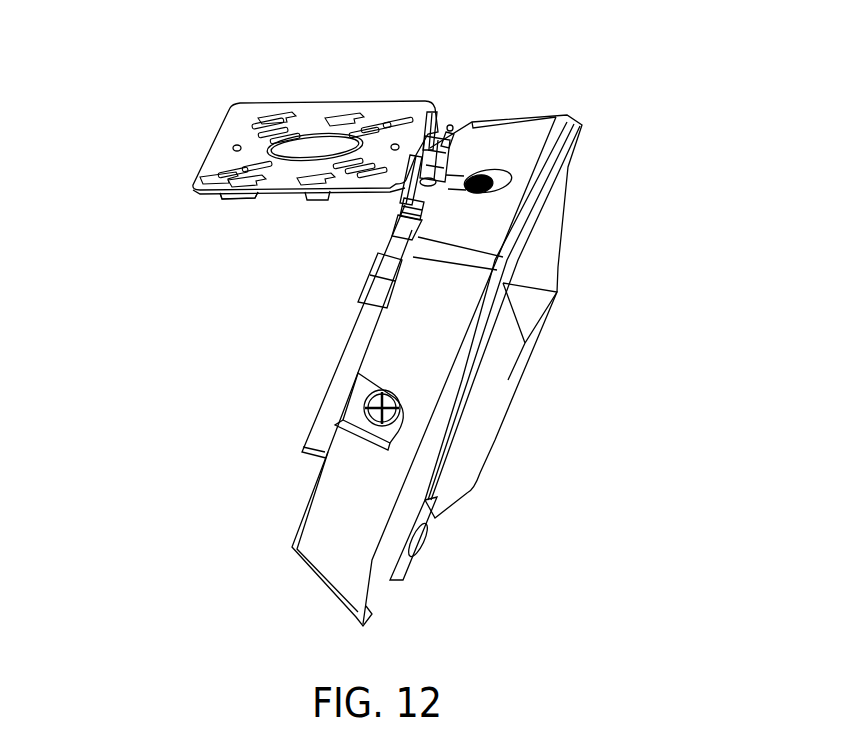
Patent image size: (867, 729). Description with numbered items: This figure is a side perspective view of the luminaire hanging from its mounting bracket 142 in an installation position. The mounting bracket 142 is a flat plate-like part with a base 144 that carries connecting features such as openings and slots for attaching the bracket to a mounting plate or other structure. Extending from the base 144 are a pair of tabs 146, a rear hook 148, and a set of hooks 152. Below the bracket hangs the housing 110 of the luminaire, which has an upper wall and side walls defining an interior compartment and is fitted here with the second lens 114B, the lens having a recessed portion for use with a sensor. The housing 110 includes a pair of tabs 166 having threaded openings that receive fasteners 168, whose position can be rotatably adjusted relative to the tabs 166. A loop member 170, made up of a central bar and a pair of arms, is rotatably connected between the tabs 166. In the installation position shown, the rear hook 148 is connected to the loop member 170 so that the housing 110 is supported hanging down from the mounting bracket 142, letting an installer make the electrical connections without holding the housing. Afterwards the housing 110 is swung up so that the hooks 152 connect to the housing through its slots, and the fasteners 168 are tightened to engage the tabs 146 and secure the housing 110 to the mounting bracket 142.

The housing 110 is at (303, 511).
The second lens 114B is at (505, 425).
The mounting bracket 142 is at (225, 122).
The base 144 is at (217, 180).
The tabs 146 is at (441, 126).
The rear hook 148 is at (448, 159).
The hooks 152 is at (228, 195).
The tabs 166 is at (413, 214).
The fasteners 168 is at (426, 196).
The loop member 170 is at (435, 148).